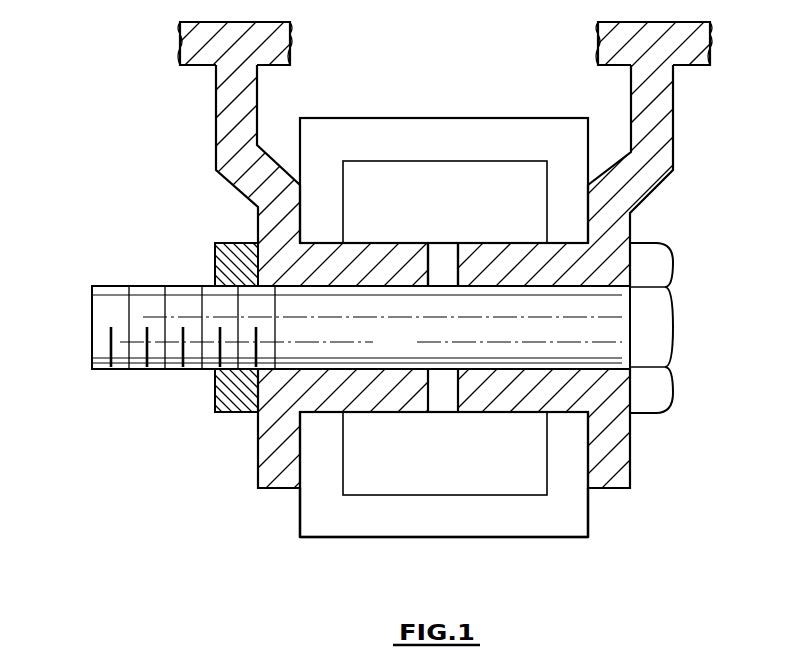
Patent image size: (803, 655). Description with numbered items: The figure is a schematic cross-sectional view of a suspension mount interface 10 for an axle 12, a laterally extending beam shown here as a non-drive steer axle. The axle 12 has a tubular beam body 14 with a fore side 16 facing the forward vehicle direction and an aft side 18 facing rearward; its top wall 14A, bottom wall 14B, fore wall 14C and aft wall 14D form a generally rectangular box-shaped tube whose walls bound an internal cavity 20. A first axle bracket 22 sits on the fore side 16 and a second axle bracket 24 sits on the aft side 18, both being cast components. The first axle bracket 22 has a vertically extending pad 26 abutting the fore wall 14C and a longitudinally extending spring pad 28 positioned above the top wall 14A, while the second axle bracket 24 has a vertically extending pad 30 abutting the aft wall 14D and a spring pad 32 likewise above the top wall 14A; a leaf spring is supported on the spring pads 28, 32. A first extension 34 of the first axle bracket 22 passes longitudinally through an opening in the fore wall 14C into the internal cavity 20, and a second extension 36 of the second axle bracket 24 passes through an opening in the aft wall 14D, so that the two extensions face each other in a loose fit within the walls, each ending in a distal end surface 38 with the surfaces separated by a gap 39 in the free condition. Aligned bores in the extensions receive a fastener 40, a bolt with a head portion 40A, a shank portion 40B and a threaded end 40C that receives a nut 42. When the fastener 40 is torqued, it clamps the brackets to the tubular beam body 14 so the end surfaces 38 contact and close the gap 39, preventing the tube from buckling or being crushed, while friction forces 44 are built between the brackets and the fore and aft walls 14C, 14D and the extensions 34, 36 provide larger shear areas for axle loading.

The suspension mount interface 10 is at (100, 72).
The axle 12 is at (299, 541).
The tubular beam body 14 is at (328, 480).
The top wall 14A is at (402, 128).
The bottom wall 14B is at (408, 538).
The fore wall 14C is at (558, 475).
The aft wall 14D is at (343, 222).
The fore side 16 is at (590, 508).
The aft side 18 is at (298, 512).
The internal cavity 20 is at (466, 182).
The first axle bracket 22 is at (655, 175).
The second axle bracket 24 is at (225, 138).
The vertically extending pad 26 is at (615, 460).
The spring pad 28 is at (705, 55).
The vertically extending pad 30 is at (265, 428).
The spring pad 32 is at (185, 45).
The first extension 34 is at (504, 248).
The second extension 36 is at (395, 407).
The distal end surface 38 is at (445, 268).
The gap 39 is at (447, 240).
The fastener 40 is at (383, 348).
The head portion 40A is at (662, 262).
The shank portion 40B is at (615, 316).
The threaded end 40C is at (137, 370).
The nut 42 is at (215, 248).
The friction forces 44 is at (343, 178).